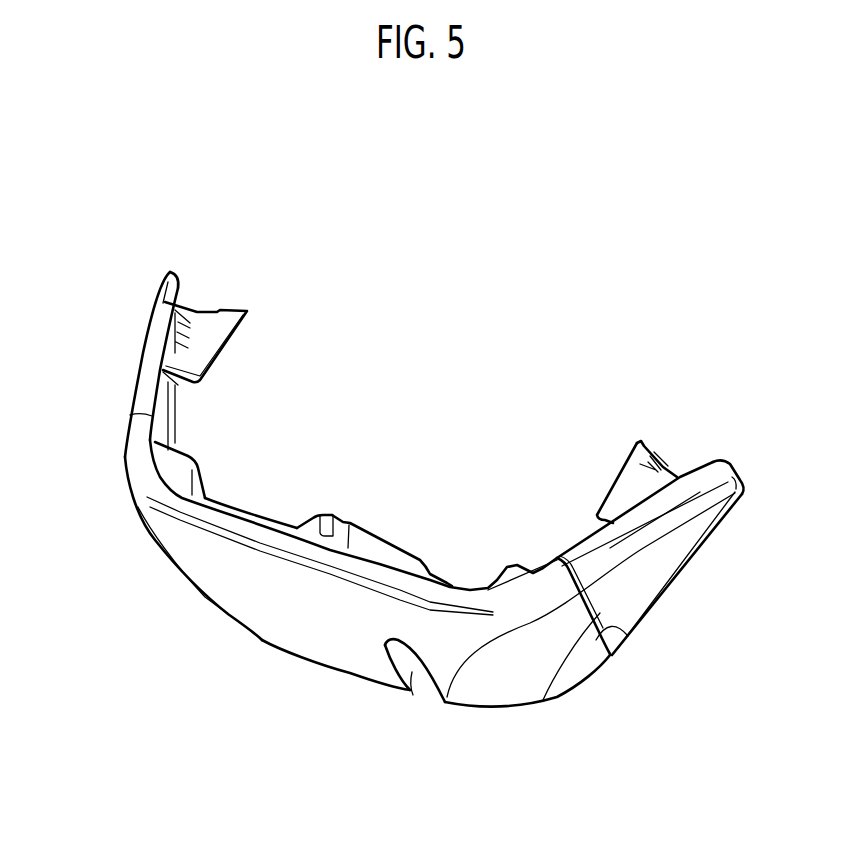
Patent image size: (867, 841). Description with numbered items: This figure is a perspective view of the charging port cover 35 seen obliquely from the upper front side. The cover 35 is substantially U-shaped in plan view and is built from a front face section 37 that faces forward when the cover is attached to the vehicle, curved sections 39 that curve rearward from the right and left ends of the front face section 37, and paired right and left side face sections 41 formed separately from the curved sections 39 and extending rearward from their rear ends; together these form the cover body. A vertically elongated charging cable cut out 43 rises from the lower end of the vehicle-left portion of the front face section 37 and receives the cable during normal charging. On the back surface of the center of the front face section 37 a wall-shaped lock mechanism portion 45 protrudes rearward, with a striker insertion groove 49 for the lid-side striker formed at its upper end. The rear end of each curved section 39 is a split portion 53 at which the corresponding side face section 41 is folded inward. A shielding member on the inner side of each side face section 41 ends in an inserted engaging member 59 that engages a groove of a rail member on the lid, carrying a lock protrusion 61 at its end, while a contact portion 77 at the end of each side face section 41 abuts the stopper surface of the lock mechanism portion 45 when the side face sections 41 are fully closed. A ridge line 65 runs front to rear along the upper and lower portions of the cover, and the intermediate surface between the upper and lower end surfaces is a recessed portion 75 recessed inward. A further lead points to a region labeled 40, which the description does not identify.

The charging port cover 35 is at (433, 269).
The front face section 37 is at (298, 646).
The curved section 39 is at (612, 665).
The lower edge 40 is at (133, 482).
The side face section 41 is at (147, 347).
The charging cable cut out 43 is at (413, 677).
The lock mechanism portion 45 is at (395, 552).
The striker insertion groove 49 is at (336, 516).
The split portion 53 is at (628, 632).
The inserted engaging member 59 is at (213, 347).
The lock protrusion 61 is at (242, 300).
The ridge line 65 is at (643, 536).
The recessed portion 75 is at (577, 657).
The contact portion 77 is at (168, 272).